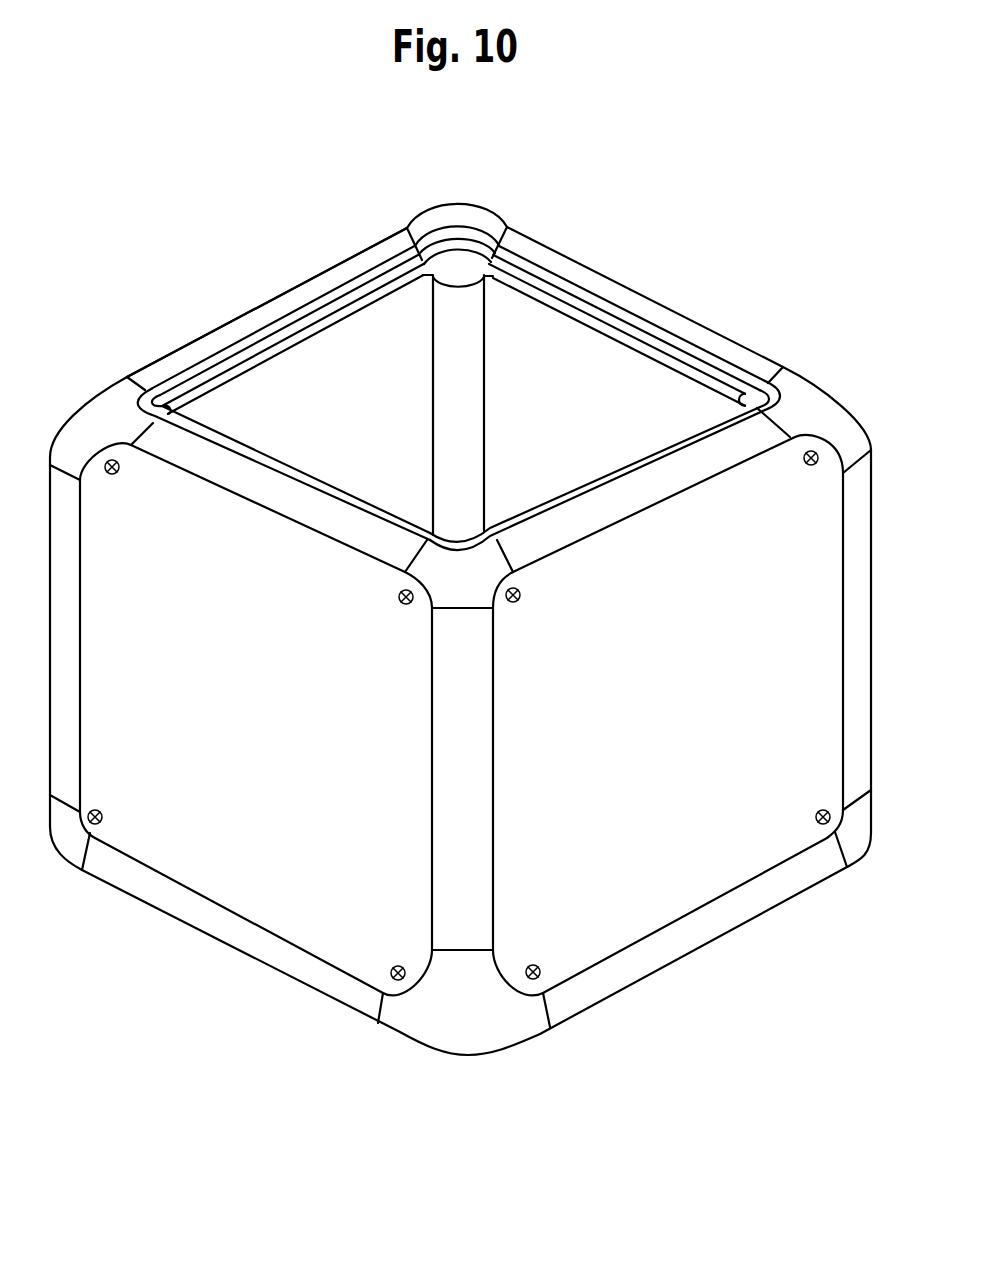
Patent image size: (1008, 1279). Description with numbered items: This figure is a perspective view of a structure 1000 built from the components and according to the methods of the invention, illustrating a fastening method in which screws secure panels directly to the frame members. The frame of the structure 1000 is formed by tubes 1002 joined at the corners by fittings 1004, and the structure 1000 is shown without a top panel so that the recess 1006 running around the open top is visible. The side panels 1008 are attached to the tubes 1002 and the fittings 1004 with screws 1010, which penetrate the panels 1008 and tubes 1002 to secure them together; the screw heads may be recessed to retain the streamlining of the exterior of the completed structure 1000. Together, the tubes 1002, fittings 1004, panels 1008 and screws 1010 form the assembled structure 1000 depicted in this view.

The structure 1000 is at (636, 256).
The tubes 1002 is at (222, 330).
The fittings 1004 is at (458, 203).
The recess 1006 is at (518, 273).
The panels 1008 is at (803, 528).
The screws 1010 is at (113, 477).